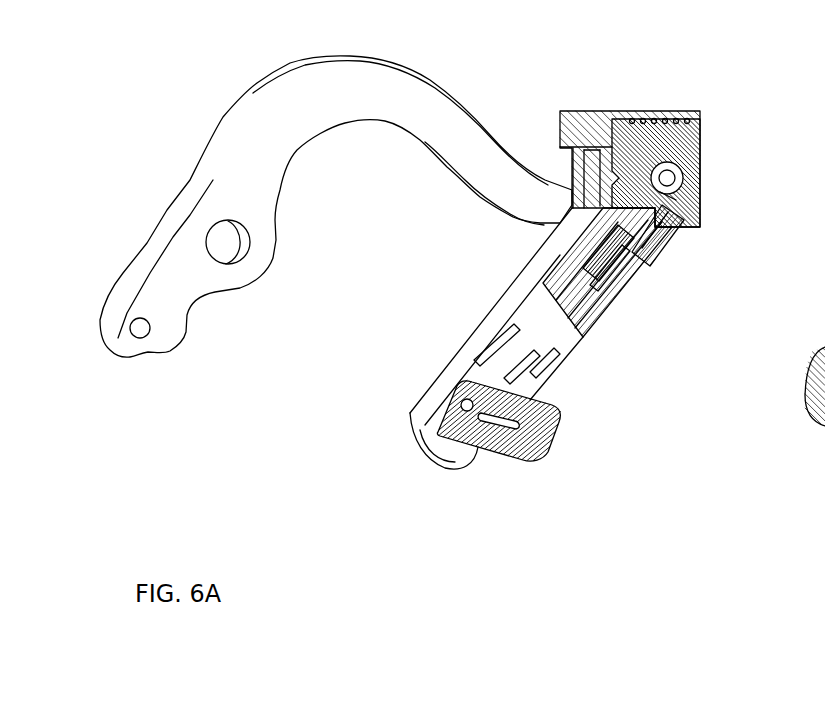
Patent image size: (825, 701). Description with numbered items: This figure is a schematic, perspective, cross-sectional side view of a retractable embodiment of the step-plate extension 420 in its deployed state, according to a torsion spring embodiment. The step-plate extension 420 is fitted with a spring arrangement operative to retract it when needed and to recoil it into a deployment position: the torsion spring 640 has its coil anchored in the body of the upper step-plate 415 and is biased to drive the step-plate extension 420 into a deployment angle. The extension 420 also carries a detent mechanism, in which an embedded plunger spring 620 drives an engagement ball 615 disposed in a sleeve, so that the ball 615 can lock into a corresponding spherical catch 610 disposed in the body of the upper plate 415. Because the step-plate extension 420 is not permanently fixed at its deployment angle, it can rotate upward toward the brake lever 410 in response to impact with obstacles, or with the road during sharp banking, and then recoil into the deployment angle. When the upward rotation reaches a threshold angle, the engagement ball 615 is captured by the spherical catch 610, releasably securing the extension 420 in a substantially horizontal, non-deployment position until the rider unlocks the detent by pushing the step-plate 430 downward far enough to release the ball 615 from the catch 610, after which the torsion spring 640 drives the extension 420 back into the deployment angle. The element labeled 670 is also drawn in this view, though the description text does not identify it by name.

The brake lever 410 is at (254, 93).
The upper step-plate 415 is at (665, 115).
The step-plate extension 420 is at (537, 245).
The step-plate 430 is at (563, 425).
The spherical catch 610 is at (609, 177).
The engagement ball 615 is at (620, 220).
The plunger spring 620 is at (582, 268).
The torsion spring 640 is at (670, 197).
The pin 670 is at (670, 248).